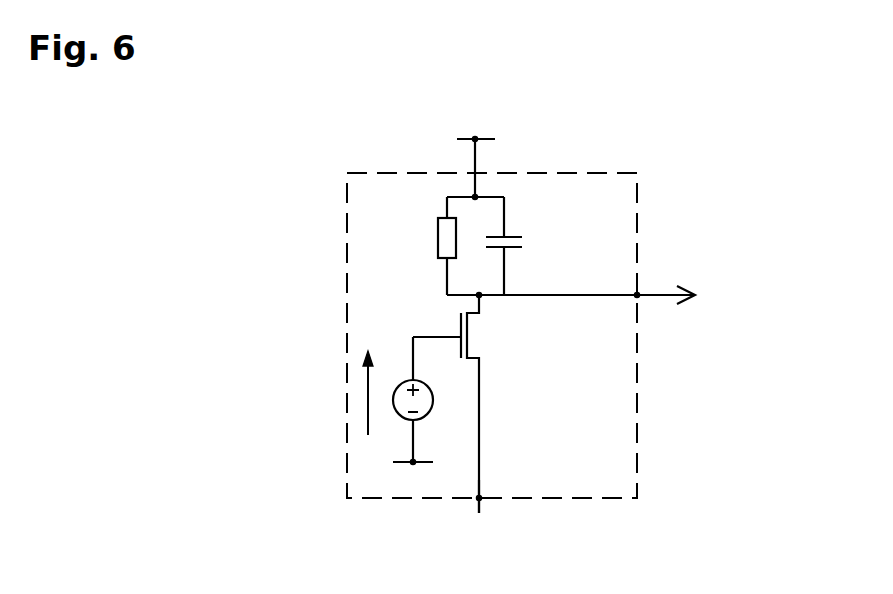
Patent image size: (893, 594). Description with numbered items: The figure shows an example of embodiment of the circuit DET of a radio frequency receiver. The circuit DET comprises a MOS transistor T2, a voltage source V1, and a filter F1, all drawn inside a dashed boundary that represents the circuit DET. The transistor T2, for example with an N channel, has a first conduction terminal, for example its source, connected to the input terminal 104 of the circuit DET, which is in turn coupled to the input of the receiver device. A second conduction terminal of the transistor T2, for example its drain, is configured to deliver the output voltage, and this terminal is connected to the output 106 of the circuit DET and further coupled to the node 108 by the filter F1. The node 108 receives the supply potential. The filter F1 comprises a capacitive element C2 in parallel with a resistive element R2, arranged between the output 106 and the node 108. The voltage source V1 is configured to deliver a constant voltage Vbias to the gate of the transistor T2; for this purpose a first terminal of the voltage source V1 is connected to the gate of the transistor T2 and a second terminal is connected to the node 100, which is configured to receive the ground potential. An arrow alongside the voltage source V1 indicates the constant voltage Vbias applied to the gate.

The node 100 is at (413, 462).
The input terminal 104 is at (475, 500).
The output 106 is at (640, 298).
The node 108 is at (482, 140).
The circuit DET is at (640, 190).
The filter F1 is at (503, 241).
The resistive element R2 is at (428, 238).
The capacitive element C2 is at (510, 218).
The MOS transistor T2 is at (476, 334).
The voltage source V1 is at (433, 398).
The constant voltage Vbias is at (368, 392).